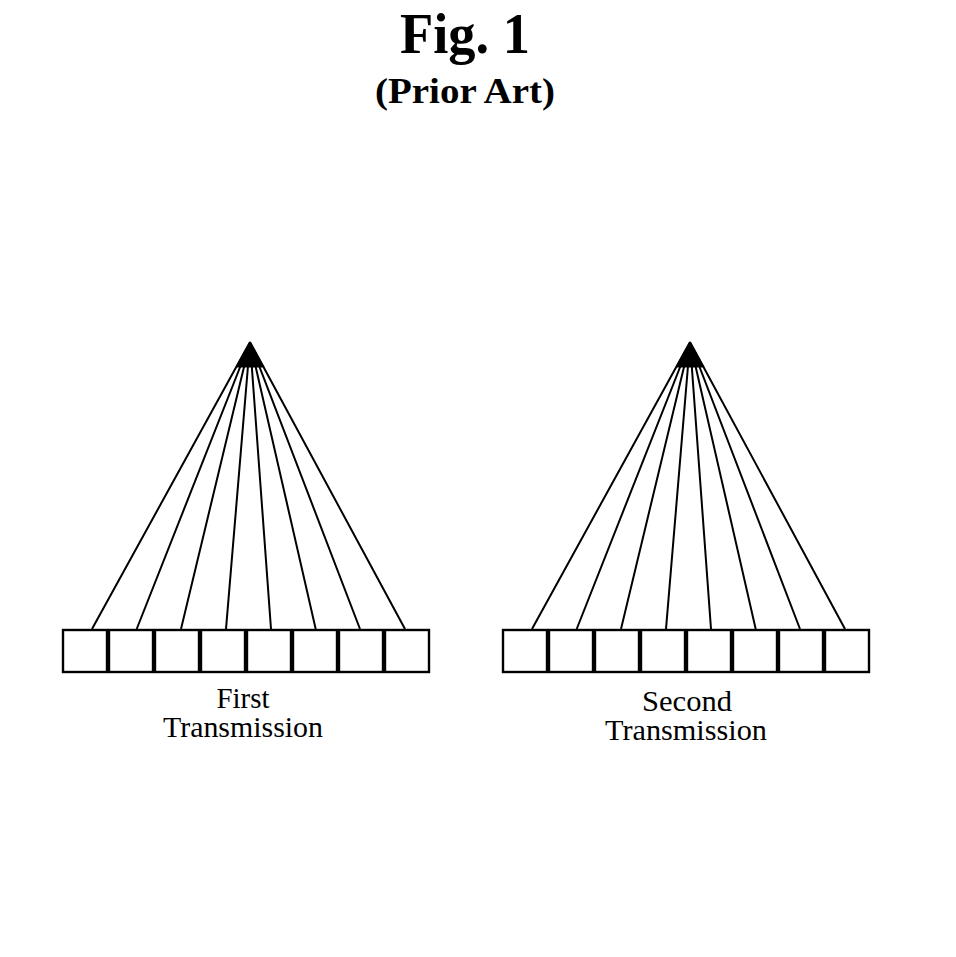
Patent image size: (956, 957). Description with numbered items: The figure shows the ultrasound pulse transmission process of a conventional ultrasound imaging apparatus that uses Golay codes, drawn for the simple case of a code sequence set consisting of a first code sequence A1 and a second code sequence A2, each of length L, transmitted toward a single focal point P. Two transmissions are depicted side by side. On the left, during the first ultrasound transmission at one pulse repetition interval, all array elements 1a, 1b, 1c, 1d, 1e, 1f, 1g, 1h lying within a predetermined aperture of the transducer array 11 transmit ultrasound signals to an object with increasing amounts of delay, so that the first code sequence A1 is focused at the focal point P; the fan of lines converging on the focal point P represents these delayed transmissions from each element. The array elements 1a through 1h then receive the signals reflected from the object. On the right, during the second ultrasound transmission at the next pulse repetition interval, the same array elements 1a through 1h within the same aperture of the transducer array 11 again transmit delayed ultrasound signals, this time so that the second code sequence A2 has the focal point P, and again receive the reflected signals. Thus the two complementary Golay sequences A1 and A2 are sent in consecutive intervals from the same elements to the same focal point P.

The transducer array 11 is at (483, 674).
The focal point P is at (470, 337).
The first code sequence A1 is at (248, 485).
The second code sequence A2 is at (688, 485).
The array element 1a is at (305, 651).
The array element 1b is at (351, 651).
The array element 1c is at (397, 651).
The array element 1d is at (443, 651).
The array element 1e is at (489, 651).
The array element 1f is at (535, 651).
The array element 1g is at (581, 651).
The array element 1h is at (627, 651).